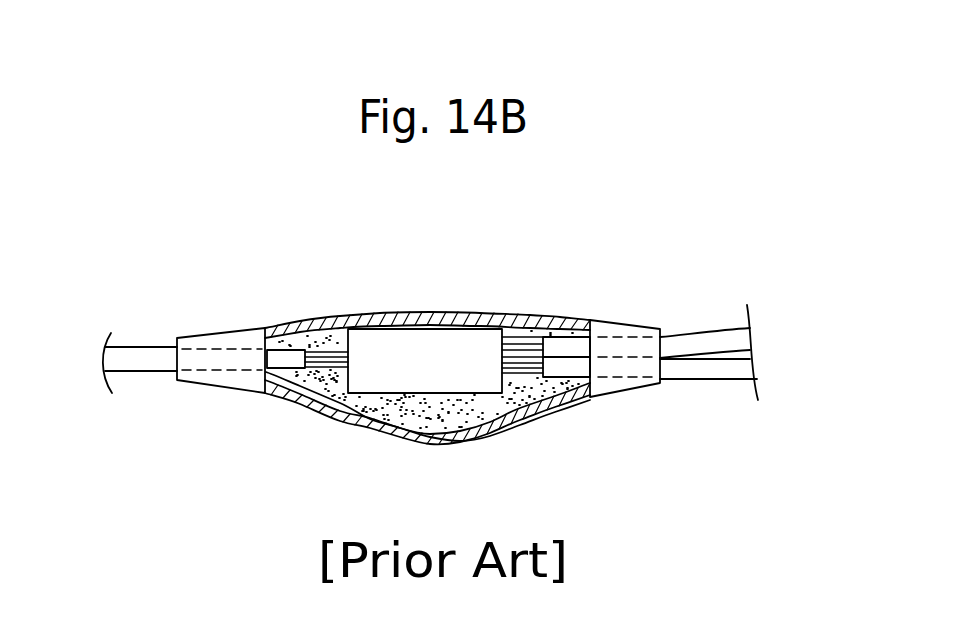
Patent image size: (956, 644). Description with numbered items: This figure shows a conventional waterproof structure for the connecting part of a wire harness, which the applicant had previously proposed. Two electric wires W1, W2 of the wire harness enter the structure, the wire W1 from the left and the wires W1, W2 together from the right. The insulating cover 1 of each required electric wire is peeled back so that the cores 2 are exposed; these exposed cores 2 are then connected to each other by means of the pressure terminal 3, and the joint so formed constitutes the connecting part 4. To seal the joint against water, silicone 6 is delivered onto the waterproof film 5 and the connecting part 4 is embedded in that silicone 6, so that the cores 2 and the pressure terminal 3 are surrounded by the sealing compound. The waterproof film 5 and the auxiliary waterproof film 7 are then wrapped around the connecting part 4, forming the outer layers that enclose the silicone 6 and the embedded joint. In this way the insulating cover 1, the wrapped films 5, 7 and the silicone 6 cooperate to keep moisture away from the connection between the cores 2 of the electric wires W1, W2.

The insulating cover 1 is at (285, 357).
The cores 2 is at (315, 368).
The pressure terminal 3 is at (453, 345).
The connecting part 4 is at (427, 409).
The waterproof film 5 is at (348, 327).
The silicone 6 is at (522, 397).
The auxiliary waterproof film 7 is at (428, 325).
The electric wire W1 is at (150, 355).
The electric wire W2 is at (705, 373).